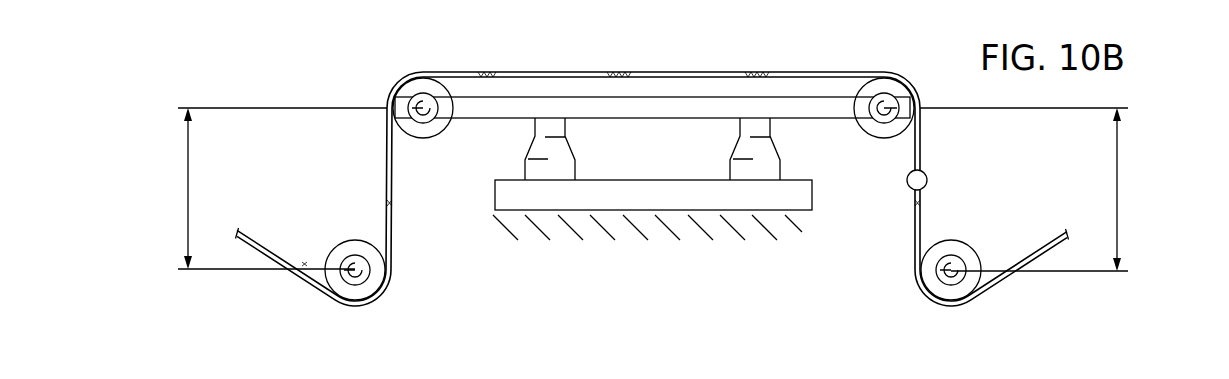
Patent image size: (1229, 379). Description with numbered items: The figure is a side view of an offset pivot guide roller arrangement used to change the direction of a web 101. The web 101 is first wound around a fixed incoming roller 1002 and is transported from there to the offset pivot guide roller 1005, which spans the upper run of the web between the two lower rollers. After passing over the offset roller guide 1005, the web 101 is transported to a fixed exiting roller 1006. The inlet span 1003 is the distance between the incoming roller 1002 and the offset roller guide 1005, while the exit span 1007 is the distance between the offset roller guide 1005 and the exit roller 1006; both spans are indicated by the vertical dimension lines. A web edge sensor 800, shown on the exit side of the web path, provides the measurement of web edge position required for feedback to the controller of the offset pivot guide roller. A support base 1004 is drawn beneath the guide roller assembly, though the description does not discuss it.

The web 101 is at (539, 66).
The web edge sensor 800 is at (906, 183).
The fixed incoming roller 1002 is at (347, 240).
The inlet span 1003 is at (188, 190).
The support base 1004 is at (493, 194).
The offset pivot guide roller 1005 is at (660, 122).
The fixed exiting roller 1006 is at (956, 240).
The exit span 1007 is at (1117, 190).